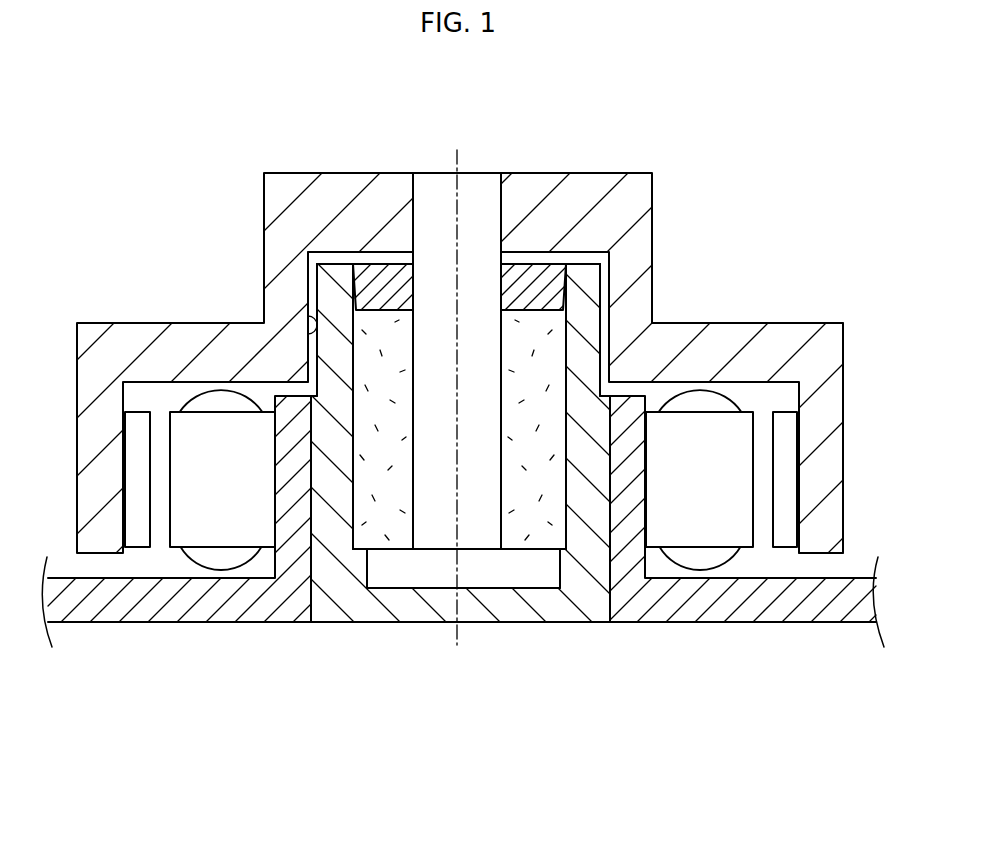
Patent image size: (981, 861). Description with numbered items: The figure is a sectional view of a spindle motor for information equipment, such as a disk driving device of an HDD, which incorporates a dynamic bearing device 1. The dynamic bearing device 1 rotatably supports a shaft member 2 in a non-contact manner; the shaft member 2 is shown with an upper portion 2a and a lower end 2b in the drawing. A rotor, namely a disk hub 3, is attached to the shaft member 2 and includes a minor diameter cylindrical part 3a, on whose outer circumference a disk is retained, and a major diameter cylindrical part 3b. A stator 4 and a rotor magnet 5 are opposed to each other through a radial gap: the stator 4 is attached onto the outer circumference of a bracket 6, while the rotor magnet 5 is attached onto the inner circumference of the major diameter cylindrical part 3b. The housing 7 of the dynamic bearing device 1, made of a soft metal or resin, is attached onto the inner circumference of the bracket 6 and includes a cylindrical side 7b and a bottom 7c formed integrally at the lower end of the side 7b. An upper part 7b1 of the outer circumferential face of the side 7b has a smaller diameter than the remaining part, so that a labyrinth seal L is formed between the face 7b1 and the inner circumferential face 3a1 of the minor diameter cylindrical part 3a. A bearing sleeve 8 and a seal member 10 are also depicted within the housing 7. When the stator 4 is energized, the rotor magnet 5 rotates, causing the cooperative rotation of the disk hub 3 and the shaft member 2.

The dynamic bearing device 1 is at (393, 666).
The shaft member 2 is at (468, 393).
The upper portion of shaft 2a is at (435, 190).
The lower end of shaft 2b is at (538, 578).
The disk hub 3 is at (598, 185).
The minor diameter cylindrical part 3a is at (640, 257).
The inner circumferential face of the minor diameter cylindrical part 3a1 is at (320, 320).
The major diameter cylindrical part 3b is at (830, 454).
The stator 4 is at (702, 532).
The rotor magnet 5 is at (790, 533).
The bracket 6 is at (643, 600).
The housing 7 is at (488, 623).
The side 7b is at (327, 473).
The upper part of the outer circumferential face of the side 7b1 is at (317, 276).
The bottom 7c is at (422, 613).
The sintered oil-impregnated bearing 8 is at (393, 538).
The seal member 10 is at (537, 273).
The labyrinth seal L is at (315, 290).